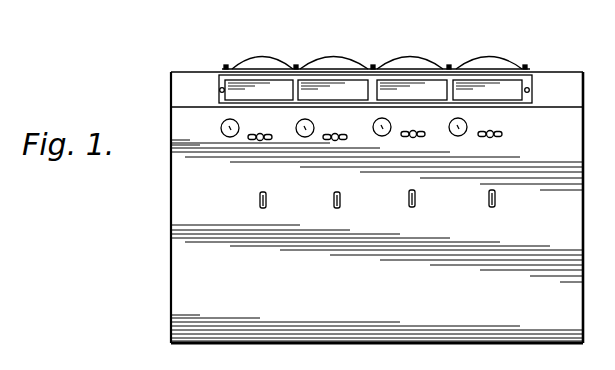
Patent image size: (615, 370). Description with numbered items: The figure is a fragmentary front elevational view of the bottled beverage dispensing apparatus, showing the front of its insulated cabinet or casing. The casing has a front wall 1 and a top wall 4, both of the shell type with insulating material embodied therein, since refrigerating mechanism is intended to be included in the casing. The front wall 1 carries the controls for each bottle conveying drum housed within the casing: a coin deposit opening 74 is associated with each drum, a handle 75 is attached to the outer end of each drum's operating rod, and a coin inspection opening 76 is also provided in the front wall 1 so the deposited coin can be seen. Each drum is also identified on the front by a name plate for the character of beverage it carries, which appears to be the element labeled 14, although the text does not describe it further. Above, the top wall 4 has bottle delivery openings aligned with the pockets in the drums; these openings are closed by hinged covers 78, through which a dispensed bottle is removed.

The front wall 1 is at (567, 219).
The top wall 4 is at (178, 84).
The knob 14 is at (383, 136).
The coin deposit openings 74 is at (283, 116).
The handle 75 is at (335, 141).
The coin inspection openings 76 is at (266, 207).
The hinged covers 78 is at (477, 58).